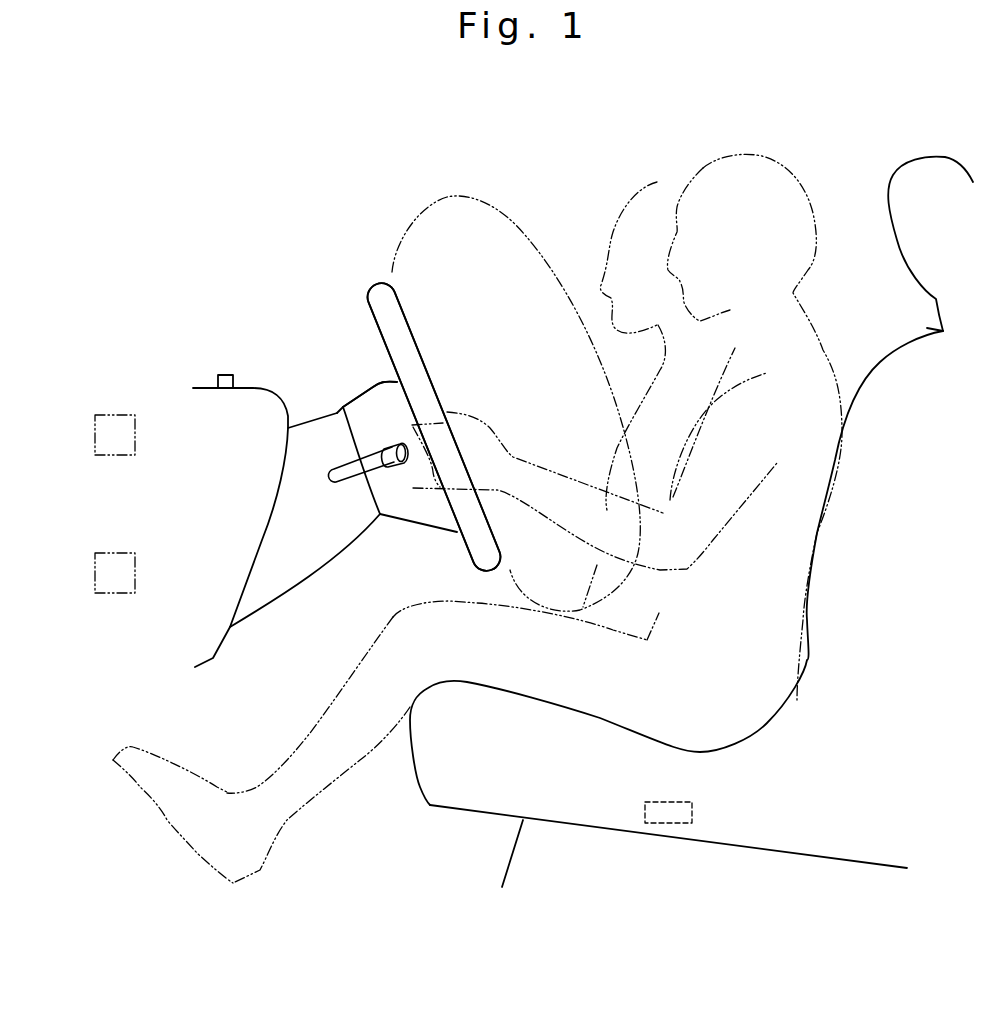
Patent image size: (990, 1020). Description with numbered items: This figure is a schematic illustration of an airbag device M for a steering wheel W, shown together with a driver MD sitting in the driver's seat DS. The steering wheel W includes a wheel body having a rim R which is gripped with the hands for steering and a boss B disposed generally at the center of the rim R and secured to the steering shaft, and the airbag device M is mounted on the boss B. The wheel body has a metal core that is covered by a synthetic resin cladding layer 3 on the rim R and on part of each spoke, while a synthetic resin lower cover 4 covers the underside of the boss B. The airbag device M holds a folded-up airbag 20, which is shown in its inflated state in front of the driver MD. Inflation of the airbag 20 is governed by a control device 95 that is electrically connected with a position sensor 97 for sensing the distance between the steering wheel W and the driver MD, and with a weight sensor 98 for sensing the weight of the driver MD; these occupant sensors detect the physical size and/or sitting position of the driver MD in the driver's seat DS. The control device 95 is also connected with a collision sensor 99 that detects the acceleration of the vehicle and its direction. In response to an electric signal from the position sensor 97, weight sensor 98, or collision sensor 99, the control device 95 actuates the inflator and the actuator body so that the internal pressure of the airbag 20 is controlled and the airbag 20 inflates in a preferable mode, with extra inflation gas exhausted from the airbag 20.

The airbag 20 is at (505, 216).
The driver MD is at (660, 177).
The rim R is at (412, 311).
The steering wheel W is at (345, 398).
The lower cover 4 is at (370, 397).
The cladding layer 3 is at (486, 570).
The boss B is at (383, 524).
The airbag device M is at (413, 531).
The position sensor 97 is at (225, 375).
The control device 95 is at (112, 415).
The collision sensor 99 is at (115, 593).
The weight sensor 98 is at (682, 807).
The driver's seat DS is at (815, 870).